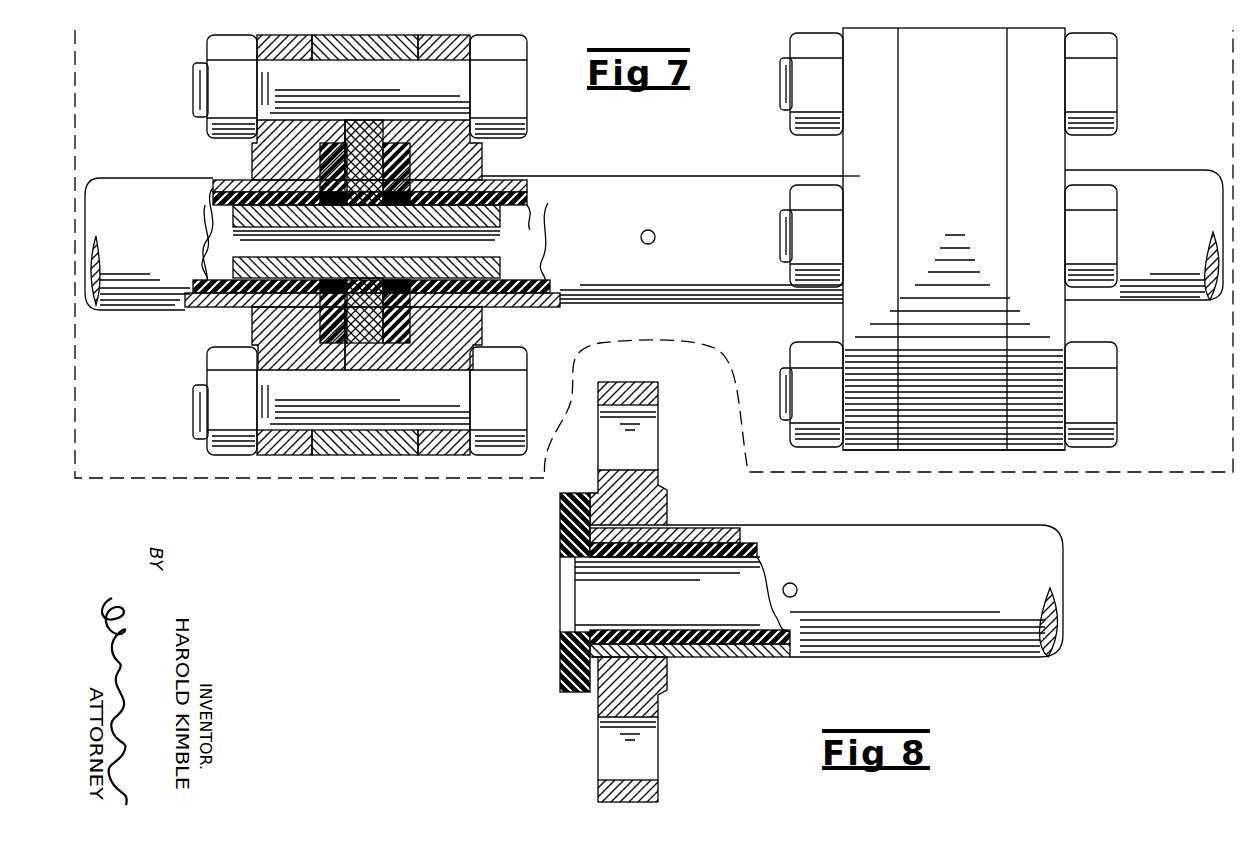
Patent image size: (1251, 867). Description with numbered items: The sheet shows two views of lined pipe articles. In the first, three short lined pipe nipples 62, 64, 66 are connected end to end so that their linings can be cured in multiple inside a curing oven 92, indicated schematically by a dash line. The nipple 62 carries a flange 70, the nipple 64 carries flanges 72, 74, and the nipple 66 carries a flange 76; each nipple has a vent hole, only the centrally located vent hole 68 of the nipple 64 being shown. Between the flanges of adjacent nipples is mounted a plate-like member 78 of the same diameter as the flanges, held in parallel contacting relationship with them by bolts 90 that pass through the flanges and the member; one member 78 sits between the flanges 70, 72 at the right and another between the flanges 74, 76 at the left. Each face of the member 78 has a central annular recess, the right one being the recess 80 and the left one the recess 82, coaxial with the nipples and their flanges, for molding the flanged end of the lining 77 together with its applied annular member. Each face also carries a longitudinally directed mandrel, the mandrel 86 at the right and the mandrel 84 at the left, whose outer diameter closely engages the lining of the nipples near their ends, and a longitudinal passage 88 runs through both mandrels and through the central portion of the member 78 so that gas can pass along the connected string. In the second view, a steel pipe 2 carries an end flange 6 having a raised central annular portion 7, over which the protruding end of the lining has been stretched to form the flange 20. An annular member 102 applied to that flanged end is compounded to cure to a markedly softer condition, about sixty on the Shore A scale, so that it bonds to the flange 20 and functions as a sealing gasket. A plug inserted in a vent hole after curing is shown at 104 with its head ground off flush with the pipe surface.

In FIG. 8, the pipe 2 is at (848, 525).
In FIG. 8, the end flange 6 is at (660, 480).
In FIG. 8, the raised central annular portion 7 is at (592, 698).
In FIG. 8, the flange of the lining 20 is at (560, 692).
In FIG. 7, the pipe nipple 62 is at (1185, 170).
In FIG. 7, the pipe nipple 64 is at (716, 176).
In FIG. 7, the pipe nipple 66 is at (110, 178).
In FIG. 7, the vent hole 68 is at (655, 233).
In FIG. 7, the flange 70 is at (1068, 157).
In FIG. 7, the flange 72 is at (843, 150).
In FIG. 7, the flange 74 is at (483, 163).
In FIG. 7, the flange 76 is at (252, 157).
In FIG. 7, the lining 77 is at (536, 307).
In FIG. 7, the plate-like member 78 is at (378, 455).
In FIG. 7, the annular recess 80 is at (390, 345).
In FIG. 7, the annular recess 82 is at (344, 345).
In FIG. 7, the mandrel 84 is at (206, 256).
In FIG. 7, the mandrel 86 is at (505, 268).
In FIG. 7, the longitudinal passage 88 is at (502, 240).
In FIG. 7, the bolts 90 is at (465, 87).
In FIG. 7, the curing oven 92 is at (125, 478).
In FIG. 8, the annular member 102 is at (560, 545).
In FIG. 8, the ground off plug 104 is at (798, 588).